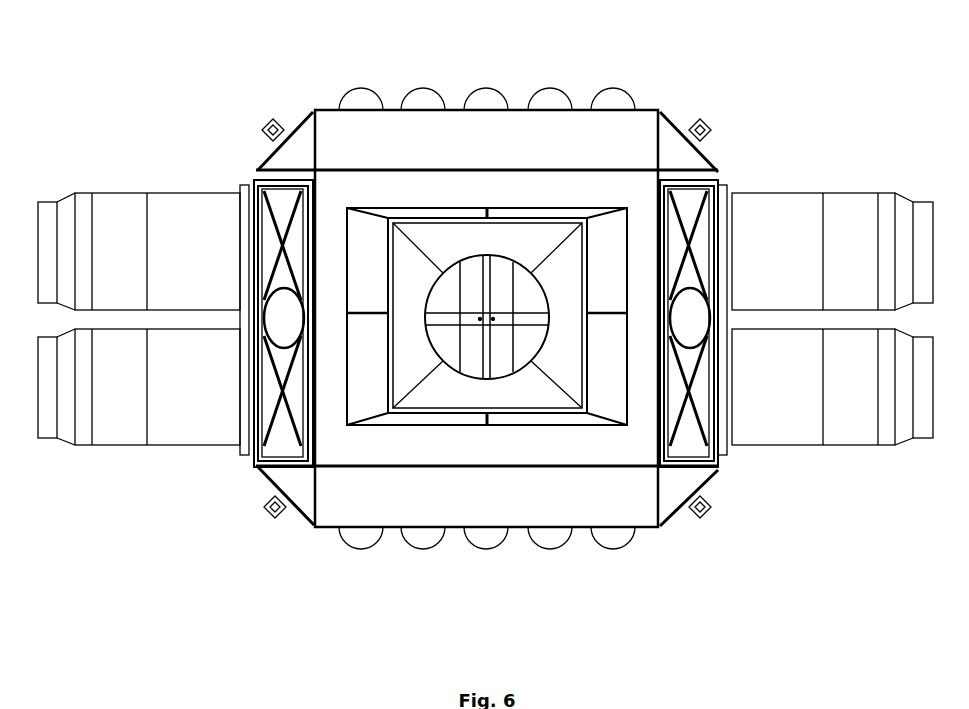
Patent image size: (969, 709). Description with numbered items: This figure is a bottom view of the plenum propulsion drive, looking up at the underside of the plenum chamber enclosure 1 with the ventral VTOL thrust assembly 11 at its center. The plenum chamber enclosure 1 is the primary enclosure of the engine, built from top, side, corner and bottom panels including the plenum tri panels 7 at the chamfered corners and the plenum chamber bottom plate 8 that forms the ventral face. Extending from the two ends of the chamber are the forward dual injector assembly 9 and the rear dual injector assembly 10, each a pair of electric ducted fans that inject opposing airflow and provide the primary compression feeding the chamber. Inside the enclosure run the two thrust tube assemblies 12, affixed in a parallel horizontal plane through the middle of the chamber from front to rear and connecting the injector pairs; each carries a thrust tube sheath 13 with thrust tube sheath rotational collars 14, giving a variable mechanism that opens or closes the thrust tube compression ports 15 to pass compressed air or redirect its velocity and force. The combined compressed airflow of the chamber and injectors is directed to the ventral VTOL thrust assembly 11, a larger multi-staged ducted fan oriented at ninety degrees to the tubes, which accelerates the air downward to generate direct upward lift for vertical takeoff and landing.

The plenum chamber enclosure 1 is at (602, 145).
The plenum tri panels 7 is at (287, 488).
The plenum chamber bottom plate 8 is at (505, 445).
The forward dual injector assembly 9 is at (833, 370).
The rear dual injector assembly 10 is at (173, 418).
The ventral VTOL thrust assembly 11 is at (400, 355).
The thrust tube assembly 12 is at (651, 451).
The thrust tube sheath 13 is at (487, 317).
The thrust tube sheath rotational collars 14 is at (487, 319).
The thrust tube compression ports 15 is at (440, 293).